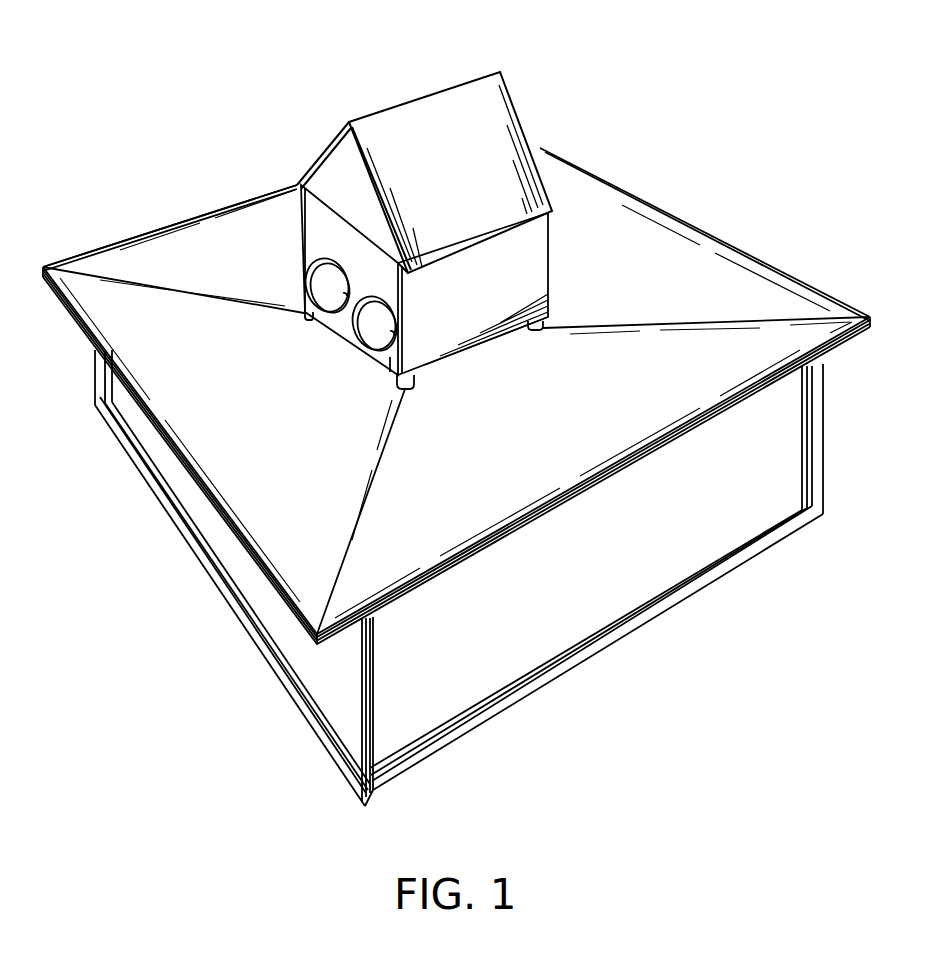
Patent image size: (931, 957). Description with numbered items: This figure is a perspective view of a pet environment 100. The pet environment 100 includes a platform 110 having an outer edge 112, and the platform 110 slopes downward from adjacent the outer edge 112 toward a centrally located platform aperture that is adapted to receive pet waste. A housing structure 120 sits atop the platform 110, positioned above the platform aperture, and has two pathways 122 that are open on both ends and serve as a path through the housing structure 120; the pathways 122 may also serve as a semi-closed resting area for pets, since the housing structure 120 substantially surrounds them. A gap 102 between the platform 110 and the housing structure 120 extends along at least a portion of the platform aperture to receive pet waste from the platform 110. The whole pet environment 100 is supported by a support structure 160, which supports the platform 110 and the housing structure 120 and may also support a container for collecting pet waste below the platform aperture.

The pet environment 100 is at (629, 113).
The gap 102 is at (456, 354).
The platform 110 is at (627, 236).
The outer edge 112 is at (197, 212).
The housing structure 120 is at (398, 100).
The pathway 122 is at (329, 293).
The support structure 160 is at (517, 704).